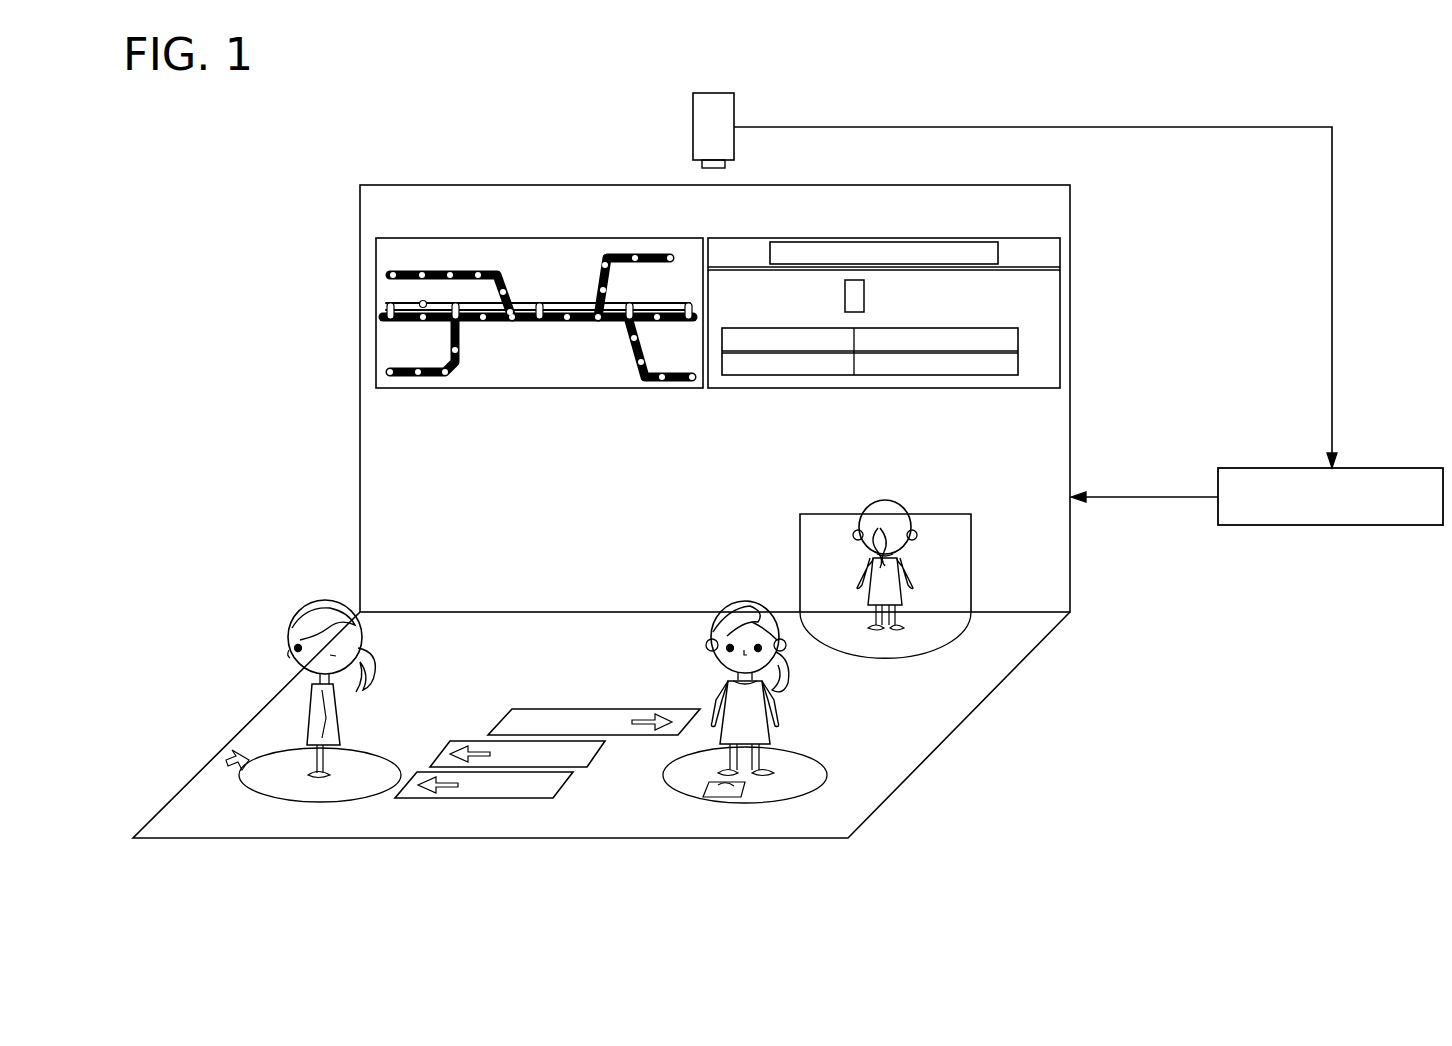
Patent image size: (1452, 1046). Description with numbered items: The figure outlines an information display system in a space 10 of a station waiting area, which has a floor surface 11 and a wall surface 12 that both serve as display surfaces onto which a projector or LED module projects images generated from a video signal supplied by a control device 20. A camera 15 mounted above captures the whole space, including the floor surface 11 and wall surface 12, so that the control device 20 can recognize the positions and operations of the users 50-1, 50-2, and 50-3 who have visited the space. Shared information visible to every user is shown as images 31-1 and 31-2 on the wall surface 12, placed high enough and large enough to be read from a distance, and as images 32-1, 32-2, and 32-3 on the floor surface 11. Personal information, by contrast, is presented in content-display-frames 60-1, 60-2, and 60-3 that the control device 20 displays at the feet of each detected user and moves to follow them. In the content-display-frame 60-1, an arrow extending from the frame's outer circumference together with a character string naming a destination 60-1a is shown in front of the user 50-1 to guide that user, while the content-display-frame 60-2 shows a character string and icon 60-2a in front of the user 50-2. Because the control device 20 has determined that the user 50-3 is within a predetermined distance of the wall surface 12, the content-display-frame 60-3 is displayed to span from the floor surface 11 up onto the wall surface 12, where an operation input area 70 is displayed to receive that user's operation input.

The space 10 is at (340, 224).
The floor surface 11 is at (945, 722).
The wall surface 12 is at (1060, 405).
The camera 15 is at (693, 127).
The control device 20 is at (1385, 466).
The image 31-1 is at (614, 237).
The image 31-2 is at (966, 237).
The image 32-1 is at (470, 799).
The image 32-2 is at (470, 741).
The image 32-3 is at (615, 702).
The user 50-1 is at (290, 612).
The user 50-2 is at (740, 600).
The user 50-3 is at (878, 498).
The content-display-frame 60-1 is at (282, 792).
The arrow and character string indicating destination 60-1a is at (300, 741).
The content-display-frame 60-2 is at (800, 760).
The ticket display 60-2a is at (700, 793).
The content-display-frame 60-3 is at (912, 650).
The operation input area 70 is at (955, 563).